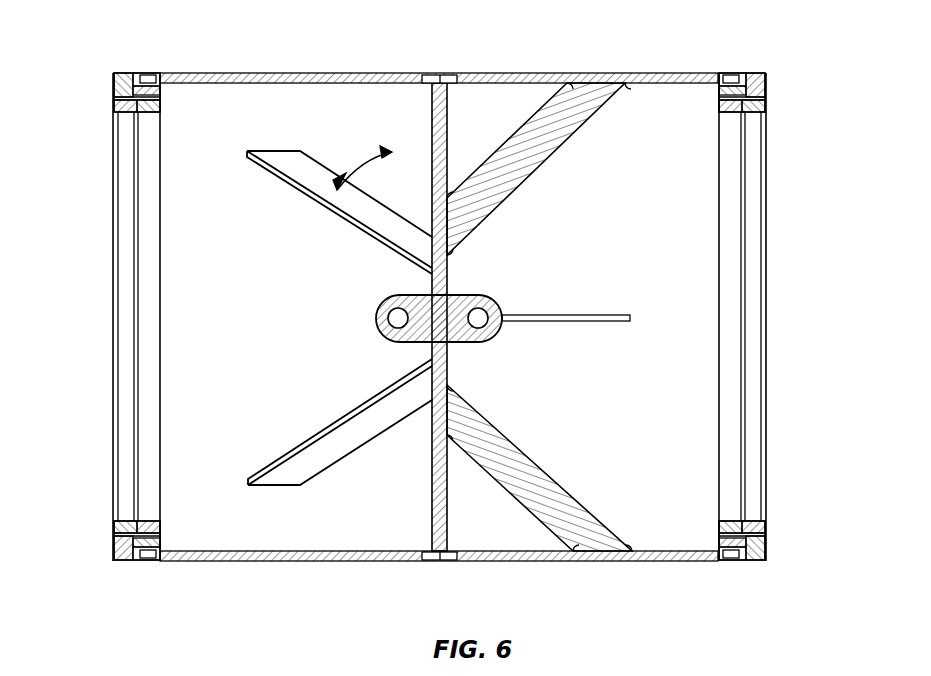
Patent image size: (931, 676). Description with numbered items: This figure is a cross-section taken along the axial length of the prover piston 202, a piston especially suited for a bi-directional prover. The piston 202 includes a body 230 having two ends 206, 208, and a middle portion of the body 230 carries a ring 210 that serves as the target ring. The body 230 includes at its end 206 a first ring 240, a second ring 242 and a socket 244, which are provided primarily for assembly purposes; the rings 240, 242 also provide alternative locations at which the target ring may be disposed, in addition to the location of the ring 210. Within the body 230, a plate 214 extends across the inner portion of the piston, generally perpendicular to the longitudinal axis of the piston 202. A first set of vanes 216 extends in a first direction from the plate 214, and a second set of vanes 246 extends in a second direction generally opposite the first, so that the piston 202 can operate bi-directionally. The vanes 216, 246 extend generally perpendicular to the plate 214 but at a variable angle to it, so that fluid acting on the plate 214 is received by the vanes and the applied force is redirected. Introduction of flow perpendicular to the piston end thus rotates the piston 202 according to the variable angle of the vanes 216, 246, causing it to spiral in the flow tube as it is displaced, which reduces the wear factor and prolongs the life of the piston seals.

The prover piston 202 is at (200, 38).
The end 206 is at (767, 497).
The end 208 is at (113, 148).
The ring 210 is at (442, 74).
The plate 214 is at (448, 377).
The first set of vanes 216 is at (535, 168).
The body 230 is at (548, 562).
The first ring 240 is at (757, 73).
The second ring 242 is at (766, 101).
The socket 244 is at (766, 95).
The second set of vanes 246 is at (352, 212).